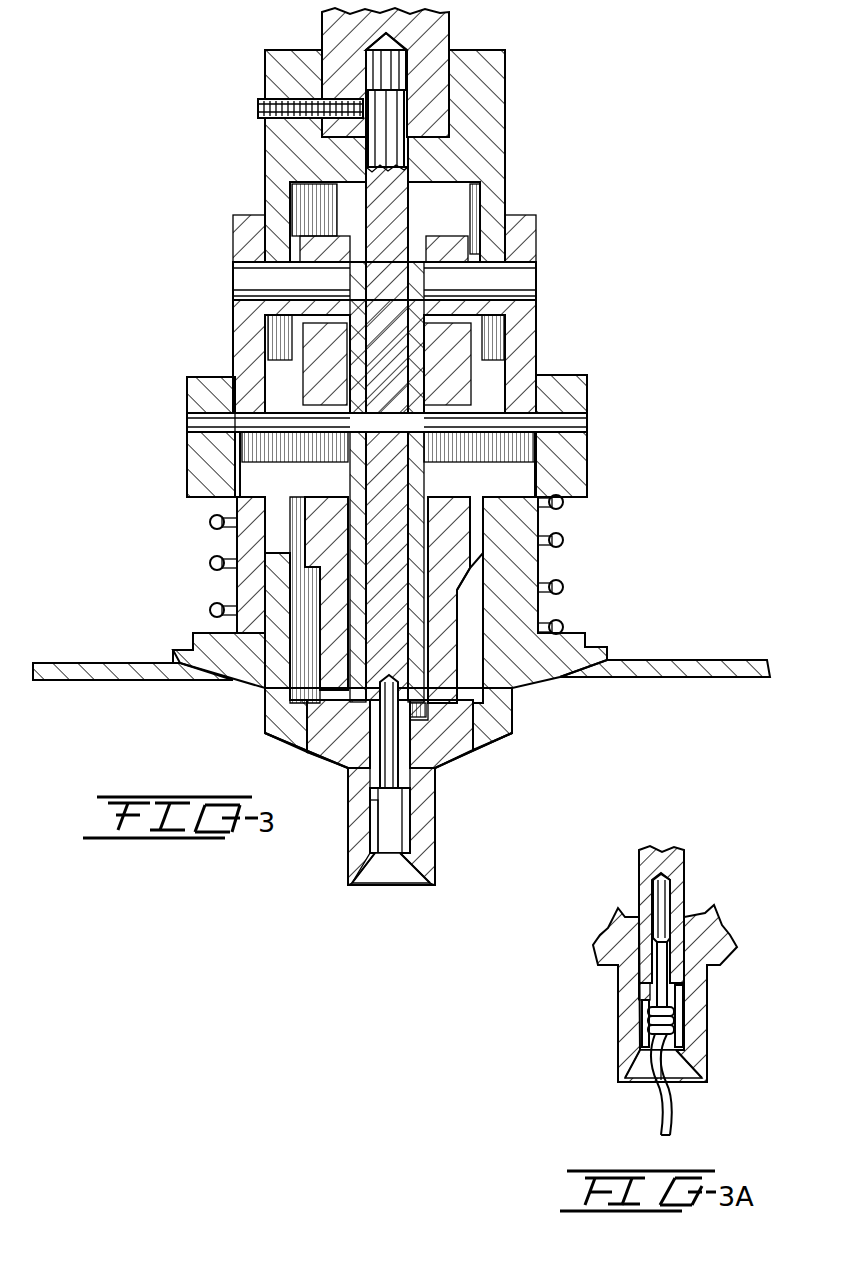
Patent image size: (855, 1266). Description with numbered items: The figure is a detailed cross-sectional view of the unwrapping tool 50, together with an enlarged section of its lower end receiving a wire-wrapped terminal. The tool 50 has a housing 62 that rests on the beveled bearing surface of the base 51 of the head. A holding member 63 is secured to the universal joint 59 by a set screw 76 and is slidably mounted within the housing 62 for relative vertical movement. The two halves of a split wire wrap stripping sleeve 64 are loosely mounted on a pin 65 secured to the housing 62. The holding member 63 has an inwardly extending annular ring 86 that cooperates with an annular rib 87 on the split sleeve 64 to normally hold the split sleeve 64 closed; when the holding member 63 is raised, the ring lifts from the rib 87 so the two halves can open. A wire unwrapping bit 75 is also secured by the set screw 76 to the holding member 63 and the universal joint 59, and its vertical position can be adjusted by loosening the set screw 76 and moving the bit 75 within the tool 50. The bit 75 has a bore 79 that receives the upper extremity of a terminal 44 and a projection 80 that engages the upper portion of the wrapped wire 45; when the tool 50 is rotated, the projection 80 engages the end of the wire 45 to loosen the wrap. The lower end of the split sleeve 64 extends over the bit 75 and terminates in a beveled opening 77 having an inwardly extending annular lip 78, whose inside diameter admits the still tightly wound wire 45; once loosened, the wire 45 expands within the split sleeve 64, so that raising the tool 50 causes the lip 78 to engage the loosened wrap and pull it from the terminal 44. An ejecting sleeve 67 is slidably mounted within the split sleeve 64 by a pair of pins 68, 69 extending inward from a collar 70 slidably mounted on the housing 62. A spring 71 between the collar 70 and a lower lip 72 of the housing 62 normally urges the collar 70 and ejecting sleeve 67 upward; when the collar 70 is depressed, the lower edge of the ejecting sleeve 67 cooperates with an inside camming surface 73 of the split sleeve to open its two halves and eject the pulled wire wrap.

In FIG. 3, the tool 50 is at (594, 221).
In FIG. 3, the base 51 is at (750, 663).
In FIG. 3, the universal joint 59 is at (437, 36).
In FIG. 3, the housing 62 is at (527, 351).
In FIG. 3, the holding member 63 is at (505, 151).
In FIG. 3, the split wire wrap stripping sleeve 64 is at (525, 531).
In FIG. 3A, the split wire wrap stripping sleeve 64 is at (715, 951).
In FIG. 3, the pin 65 is at (520, 281).
In FIG. 3, the ejecting sleeve 67 is at (357, 478).
In FIG. 3, the pin 68 is at (582, 419).
In FIG. 3, the pin 69 is at (193, 421).
In FIG. 3, the collar 70 is at (590, 471).
In FIG. 3, the spring 71 is at (563, 589).
In FIG. 3, the lower lip 72 is at (587, 639).
In FIG. 3, the inside camming surface 73 is at (425, 706).
In FIG. 3, the wire unwrapping bit 75 is at (393, 216).
In FIG. 3A, the wire unwrapping bit 75 is at (672, 867).
In FIG. 3, the set screw 76 is at (258, 105).
In FIG. 3, the beveled opening 77 is at (415, 886).
In FIG. 3A, the beveled opening 77 is at (683, 1083).
In FIG. 3, the annular lip 78 is at (408, 836).
In FIG. 3A, the annular lip 78 is at (685, 1036).
In FIG. 3, the bore 79 is at (393, 769).
In FIG. 3A, the bore 79 is at (656, 896).
In FIG. 3, the projection 80 is at (373, 798).
In FIG. 3A, the projection 80 is at (642, 1006).
In FIG. 3, the annular ring 86 is at (300, 724).
In FIG. 3, the annular rib 87 is at (307, 755).
In FIG. 3A, the wrapped wire 45 is at (676, 1011).
In FIG. 3A, the terminal 44 is at (672, 1128).